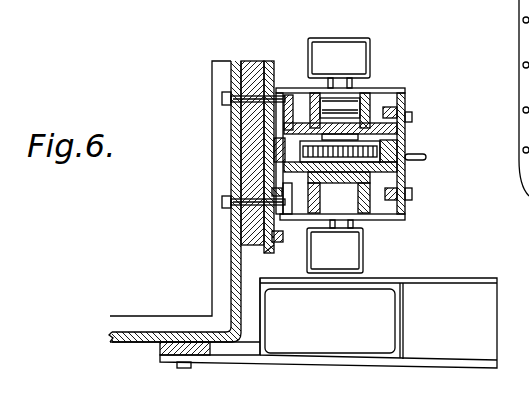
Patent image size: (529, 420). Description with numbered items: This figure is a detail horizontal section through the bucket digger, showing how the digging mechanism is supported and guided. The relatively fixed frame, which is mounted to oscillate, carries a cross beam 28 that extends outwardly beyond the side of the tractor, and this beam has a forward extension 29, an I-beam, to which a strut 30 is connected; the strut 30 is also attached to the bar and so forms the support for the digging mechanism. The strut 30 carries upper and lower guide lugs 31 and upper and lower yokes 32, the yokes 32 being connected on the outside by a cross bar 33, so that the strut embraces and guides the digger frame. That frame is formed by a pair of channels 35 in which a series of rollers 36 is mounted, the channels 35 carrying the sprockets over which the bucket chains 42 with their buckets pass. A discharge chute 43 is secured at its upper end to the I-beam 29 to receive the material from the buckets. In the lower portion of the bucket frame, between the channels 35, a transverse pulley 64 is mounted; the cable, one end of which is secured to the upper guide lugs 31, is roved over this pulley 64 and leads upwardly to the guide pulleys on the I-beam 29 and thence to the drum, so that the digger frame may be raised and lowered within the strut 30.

The cross beam 28 is at (150, 318).
The forward extension 29 is at (214, 257).
The strut 30 is at (246, 152).
The guide lugs 31 is at (297, 107).
The yokes 32 is at (378, 88).
The cross bar 33 is at (408, 107).
The channels 35 is at (392, 182).
The rollers 36 is at (370, 103).
The bucket chains 42 is at (347, 223).
The discharge chute 43 is at (365, 257).
The transverse pulley 64 is at (424, 158).